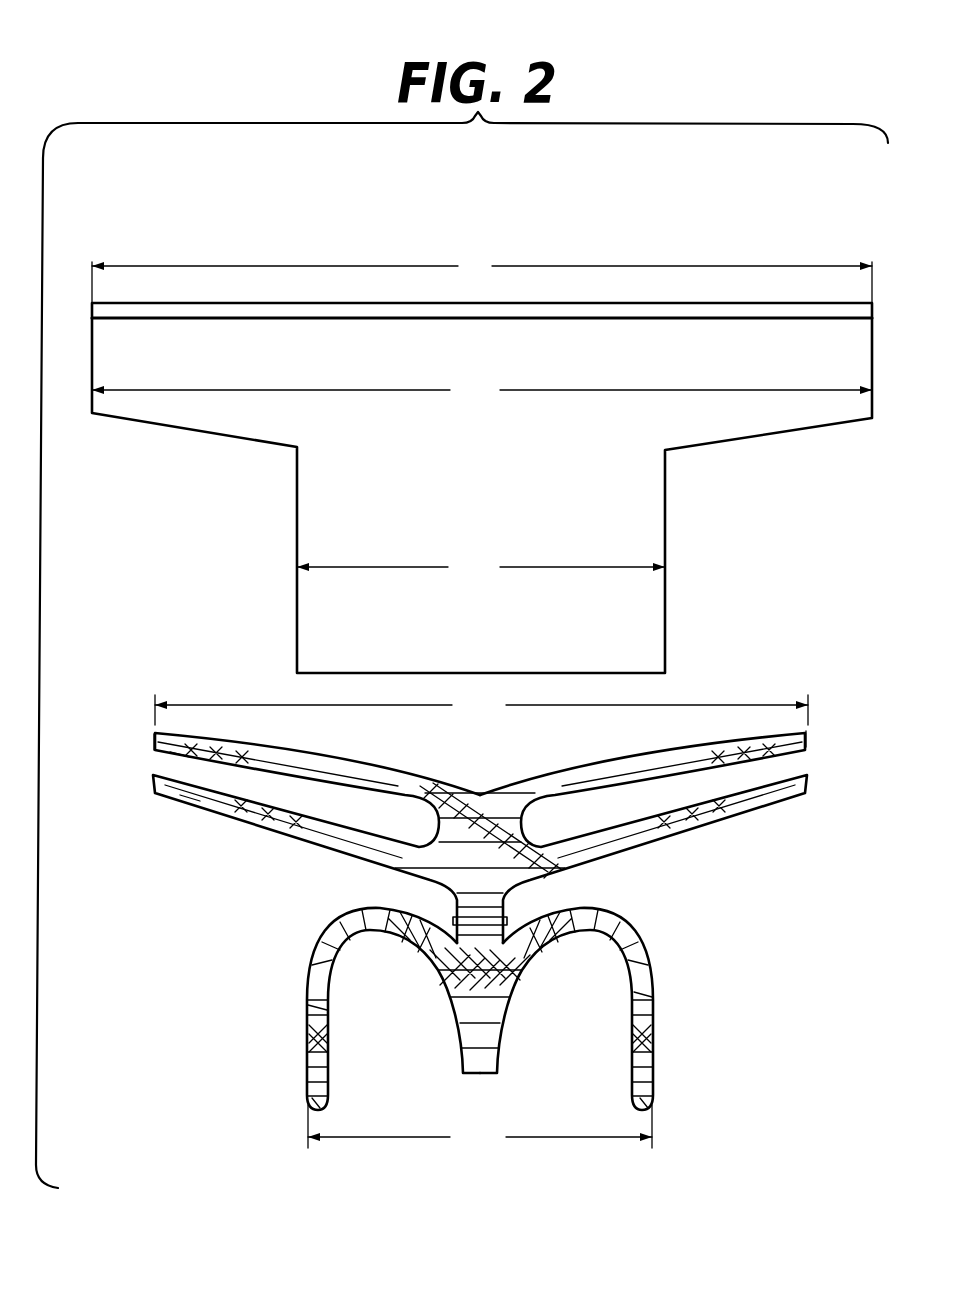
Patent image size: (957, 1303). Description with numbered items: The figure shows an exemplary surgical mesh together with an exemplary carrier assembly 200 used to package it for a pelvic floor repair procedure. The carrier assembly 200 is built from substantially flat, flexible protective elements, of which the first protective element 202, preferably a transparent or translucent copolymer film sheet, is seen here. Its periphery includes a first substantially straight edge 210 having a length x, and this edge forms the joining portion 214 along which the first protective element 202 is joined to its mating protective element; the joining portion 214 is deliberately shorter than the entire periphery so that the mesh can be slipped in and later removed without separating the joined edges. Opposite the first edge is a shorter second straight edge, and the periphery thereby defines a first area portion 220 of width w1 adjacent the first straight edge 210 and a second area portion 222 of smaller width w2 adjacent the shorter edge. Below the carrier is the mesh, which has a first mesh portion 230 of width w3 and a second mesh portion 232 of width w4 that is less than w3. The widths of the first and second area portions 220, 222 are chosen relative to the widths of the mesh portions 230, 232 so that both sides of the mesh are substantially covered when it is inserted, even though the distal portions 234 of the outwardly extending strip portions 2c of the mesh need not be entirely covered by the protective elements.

The carrier assembly 200 is at (292, 236).
The first substantially straight edge 210 is at (722, 307).
The joining portion 214 is at (549, 310).
The first area portion 220 is at (407, 373).
The second area portion 222 is at (478, 623).
The first protective element 202 is at (650, 501).
The first mesh portion 230 is at (737, 825).
The second mesh portion 232 is at (663, 1042).
The distal portions 234 is at (152, 742).
The strip portions 2c is at (178, 756).